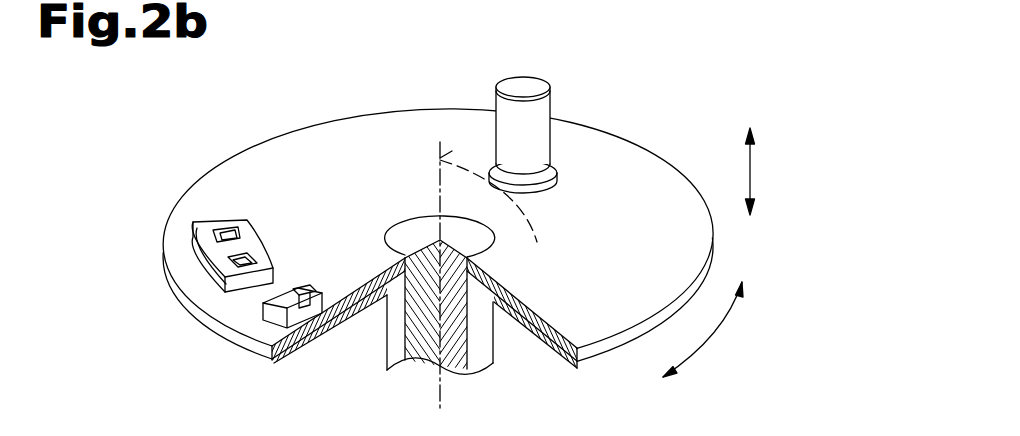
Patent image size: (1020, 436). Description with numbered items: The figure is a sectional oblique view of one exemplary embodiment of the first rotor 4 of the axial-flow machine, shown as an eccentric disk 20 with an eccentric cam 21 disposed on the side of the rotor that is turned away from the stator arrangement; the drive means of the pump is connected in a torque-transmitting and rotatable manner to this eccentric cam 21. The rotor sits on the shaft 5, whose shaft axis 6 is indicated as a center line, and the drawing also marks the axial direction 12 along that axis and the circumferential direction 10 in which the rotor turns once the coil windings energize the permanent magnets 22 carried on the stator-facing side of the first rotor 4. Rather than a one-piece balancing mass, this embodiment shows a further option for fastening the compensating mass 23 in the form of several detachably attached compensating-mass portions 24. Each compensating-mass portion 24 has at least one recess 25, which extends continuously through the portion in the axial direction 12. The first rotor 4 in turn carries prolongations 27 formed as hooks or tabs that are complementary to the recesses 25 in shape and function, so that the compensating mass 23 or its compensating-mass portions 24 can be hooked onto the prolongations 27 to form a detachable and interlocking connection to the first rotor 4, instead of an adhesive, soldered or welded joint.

The first rotor 4 is at (438, 218).
The eccentric disk 20 is at (322, 147).
The eccentric cam 21 is at (524, 89).
The permanent magnet 22 is at (297, 343).
The compensating mass 23 is at (213, 335).
The compensating-mass portion 24 is at (273, 318).
The recess 25 is at (195, 224).
The prolongation 27 is at (302, 290).
The shaft 5 is at (453, 318).
The shaft axis 6 is at (494, 216).
The axial direction 12 is at (752, 172).
The circumferential direction 10 is at (732, 335).